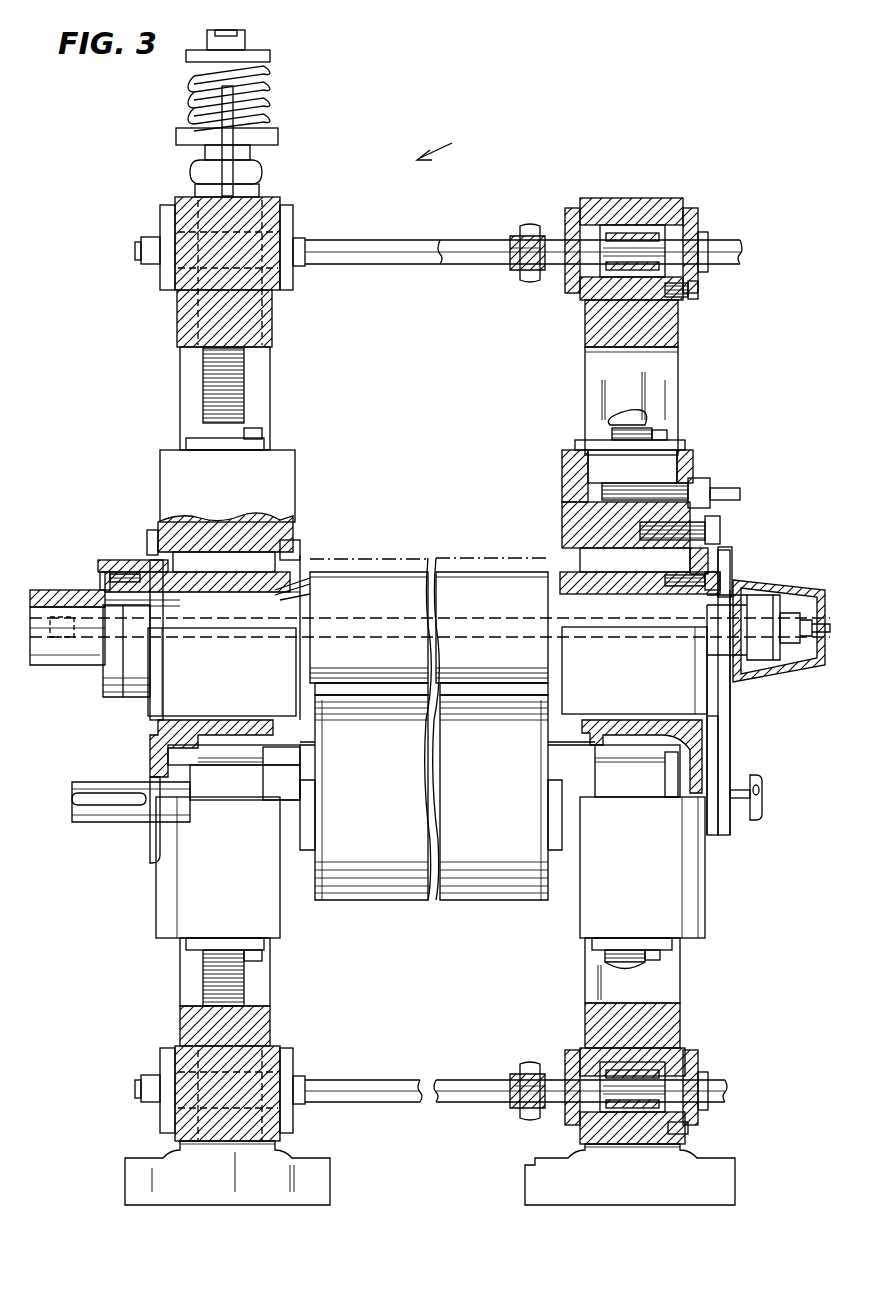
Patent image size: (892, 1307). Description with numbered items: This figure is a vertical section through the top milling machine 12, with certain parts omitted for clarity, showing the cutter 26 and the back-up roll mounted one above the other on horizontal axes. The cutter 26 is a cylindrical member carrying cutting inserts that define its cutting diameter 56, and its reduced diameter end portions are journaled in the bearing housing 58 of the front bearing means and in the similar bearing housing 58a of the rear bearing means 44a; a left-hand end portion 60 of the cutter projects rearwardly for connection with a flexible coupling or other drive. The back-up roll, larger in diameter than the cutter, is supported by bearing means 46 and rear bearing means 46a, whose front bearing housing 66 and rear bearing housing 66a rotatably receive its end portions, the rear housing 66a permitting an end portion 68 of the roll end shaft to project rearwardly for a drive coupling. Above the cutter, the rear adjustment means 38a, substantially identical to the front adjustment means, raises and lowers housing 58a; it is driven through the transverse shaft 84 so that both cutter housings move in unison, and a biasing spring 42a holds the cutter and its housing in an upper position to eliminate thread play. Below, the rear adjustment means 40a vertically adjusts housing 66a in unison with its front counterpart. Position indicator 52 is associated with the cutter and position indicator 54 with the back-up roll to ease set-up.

The top milling machine 12 is at (451, 139).
The cutter 26 is at (364, 586).
The rear adjustment means 38a is at (164, 378).
The rear adjustment means for back-up roll 40a is at (160, 1052).
The biasing spring 42a is at (266, 100).
The rear bearing means 44a is at (140, 712).
The bearing means 46 is at (708, 874).
The rear bearing means 46a is at (150, 886).
The position indicator 52 is at (728, 574).
The position indicator 54 is at (732, 722).
The cutting diameter 56 is at (456, 560).
The bearing housing 58 is at (648, 697).
The bearing housing 58a is at (236, 696).
The left-hand end portion of the cutter 60 is at (52, 588).
The front bearing housing 66 is at (650, 892).
The rear bearing housing 66a is at (240, 887).
The end portion of the back-up roll end shaft 68 is at (60, 806).
The shaft 84 is at (734, 240).